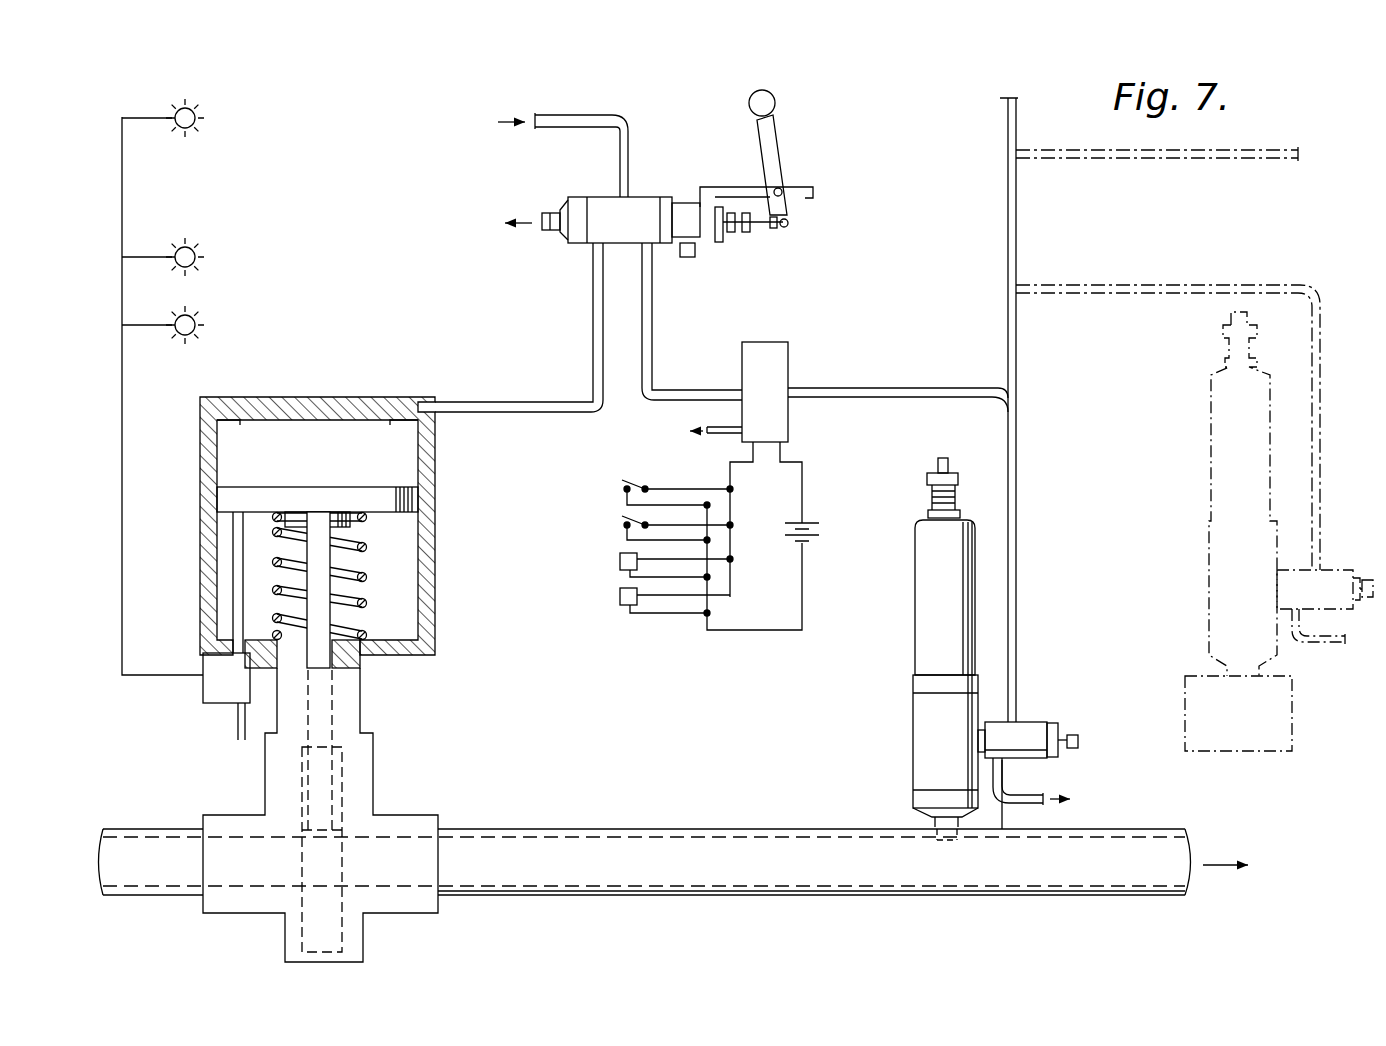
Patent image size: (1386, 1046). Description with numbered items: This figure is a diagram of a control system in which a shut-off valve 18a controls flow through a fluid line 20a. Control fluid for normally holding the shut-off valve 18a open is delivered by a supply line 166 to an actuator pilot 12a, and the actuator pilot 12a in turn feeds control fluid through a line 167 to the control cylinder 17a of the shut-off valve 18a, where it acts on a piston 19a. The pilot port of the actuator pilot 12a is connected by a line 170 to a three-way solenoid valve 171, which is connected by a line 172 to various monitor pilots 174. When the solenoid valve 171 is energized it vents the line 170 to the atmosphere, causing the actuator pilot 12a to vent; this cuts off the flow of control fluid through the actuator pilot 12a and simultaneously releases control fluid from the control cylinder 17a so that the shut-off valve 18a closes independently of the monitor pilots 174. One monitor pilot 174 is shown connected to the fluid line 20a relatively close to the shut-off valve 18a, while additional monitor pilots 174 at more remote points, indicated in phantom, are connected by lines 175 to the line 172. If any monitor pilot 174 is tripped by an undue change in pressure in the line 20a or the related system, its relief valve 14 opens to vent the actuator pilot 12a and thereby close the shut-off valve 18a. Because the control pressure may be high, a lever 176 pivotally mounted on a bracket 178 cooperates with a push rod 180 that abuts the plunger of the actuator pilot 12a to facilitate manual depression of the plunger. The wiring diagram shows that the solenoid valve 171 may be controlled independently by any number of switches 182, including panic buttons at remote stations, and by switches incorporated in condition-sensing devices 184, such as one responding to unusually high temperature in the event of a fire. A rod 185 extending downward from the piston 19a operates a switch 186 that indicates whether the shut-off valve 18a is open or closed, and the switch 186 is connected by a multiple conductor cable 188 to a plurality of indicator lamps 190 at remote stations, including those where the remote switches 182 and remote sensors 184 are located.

The actuator pilot 12a is at (650, 196).
The relief valve 14 is at (1042, 718).
The control cylinder 17a is at (217, 483).
The shut-off valve 18a is at (418, 658).
The piston 19a is at (318, 478).
The fluid line 20a is at (741, 828).
The supply line 166 is at (625, 122).
The line 167 is at (498, 407).
The line 170 is at (653, 298).
The 3-way solenoid valve 171 is at (768, 347).
The line 172 is at (840, 388).
The monitor pilot 174 is at (915, 641).
The lines 175 is at (1165, 160).
The lever 176 is at (772, 95).
The bracket 178 is at (802, 185).
The push rod 180 is at (755, 232).
The switches 182 is at (620, 482).
The condition-sensing devices 184 is at (620, 562).
The rod 185 is at (243, 601).
The switch 186 is at (222, 697).
The multiple conductor cable 188 is at (122, 370).
The indicator lamps 190 is at (205, 125).